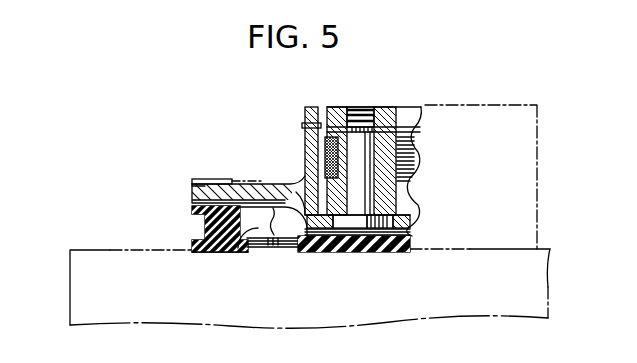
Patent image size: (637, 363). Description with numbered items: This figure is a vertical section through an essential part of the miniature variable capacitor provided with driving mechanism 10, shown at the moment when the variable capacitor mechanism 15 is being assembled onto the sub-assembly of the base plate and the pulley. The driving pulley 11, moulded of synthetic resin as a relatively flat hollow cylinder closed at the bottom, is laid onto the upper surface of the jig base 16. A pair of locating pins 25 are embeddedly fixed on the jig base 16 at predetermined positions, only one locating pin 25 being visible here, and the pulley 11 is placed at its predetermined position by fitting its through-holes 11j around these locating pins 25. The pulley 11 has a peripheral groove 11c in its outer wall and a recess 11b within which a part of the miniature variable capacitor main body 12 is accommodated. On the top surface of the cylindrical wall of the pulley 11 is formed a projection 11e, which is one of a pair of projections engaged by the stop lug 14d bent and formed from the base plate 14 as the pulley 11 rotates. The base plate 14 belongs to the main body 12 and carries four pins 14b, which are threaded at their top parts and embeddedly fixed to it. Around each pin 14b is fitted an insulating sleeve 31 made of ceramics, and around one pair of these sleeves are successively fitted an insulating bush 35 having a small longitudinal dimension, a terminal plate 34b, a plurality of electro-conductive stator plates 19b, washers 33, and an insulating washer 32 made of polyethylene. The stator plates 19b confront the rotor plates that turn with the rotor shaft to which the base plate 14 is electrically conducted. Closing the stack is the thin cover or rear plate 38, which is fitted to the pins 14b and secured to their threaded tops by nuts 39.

The miniature variable capacitor provided with driving mechanism 10 is at (222, 97).
The driving pulley 11 is at (220, 254).
The recess 11b is at (252, 243).
The peripheral groove 11c is at (202, 218).
The projection 11e is at (207, 178).
The through-hole 11j is at (287, 243).
The miniature variable capacitor main body 12 is at (290, 140).
The base plate 14 is at (264, 181).
The pin 14b is at (359, 103).
The stop lug 14d is at (192, 189).
The variable capacitor mechanism 15 is at (298, 128).
The jig base 16 is at (96, 246).
The stator plate 19b is at (420, 171).
The locating pin 25 is at (279, 250).
The insulating sleeve 31 is at (371, 242).
The insulating washer 32 is at (417, 133).
The washer 33 is at (400, 176).
The terminal plate 34b is at (327, 108).
The insulating bush 35 is at (400, 206).
The rear plate 38 is at (412, 107).
The nut 39 is at (386, 107).